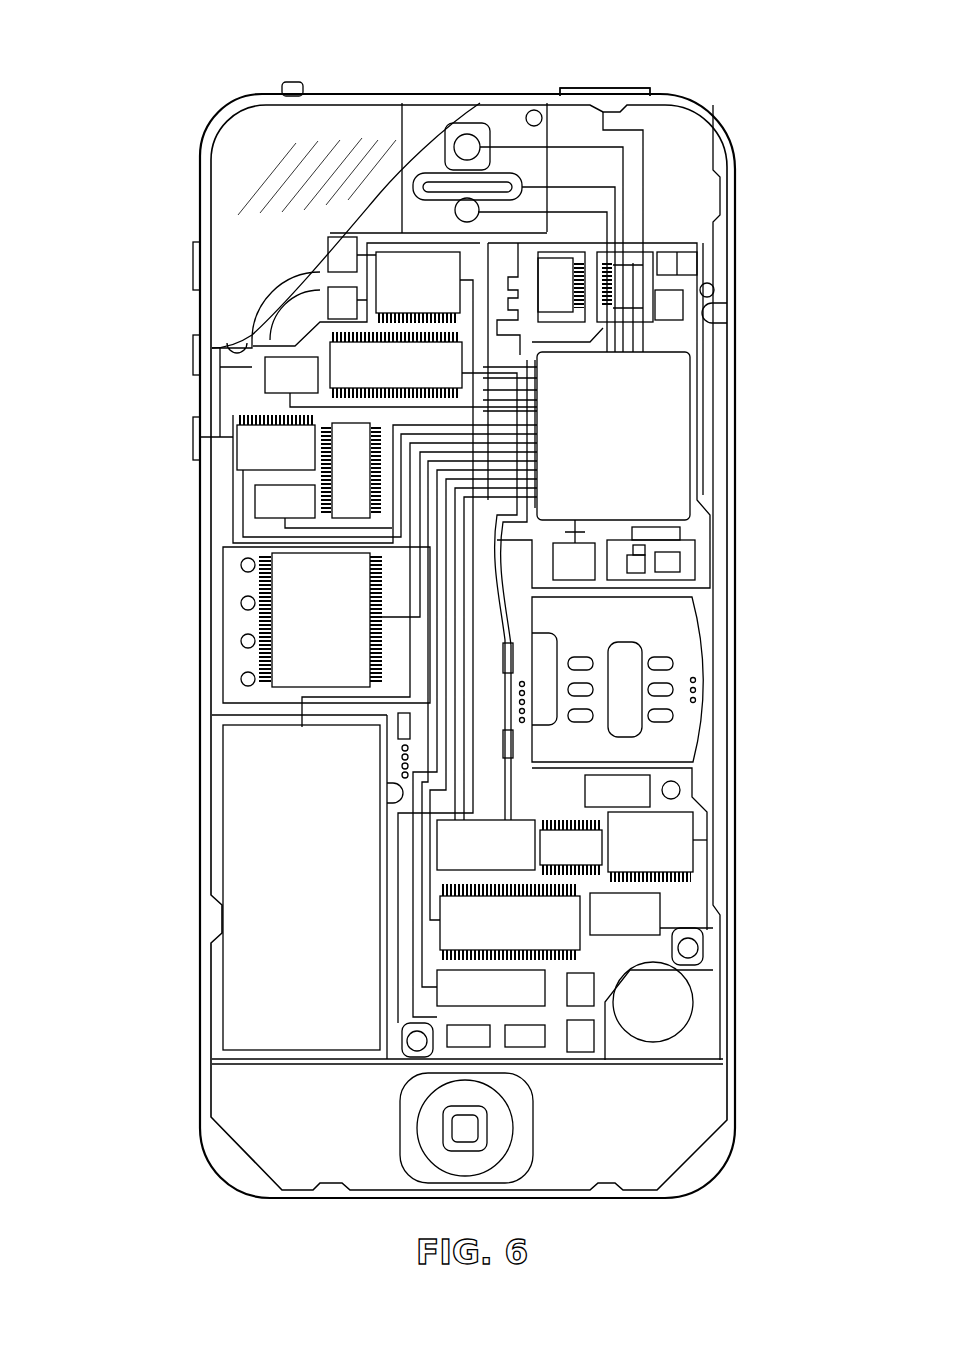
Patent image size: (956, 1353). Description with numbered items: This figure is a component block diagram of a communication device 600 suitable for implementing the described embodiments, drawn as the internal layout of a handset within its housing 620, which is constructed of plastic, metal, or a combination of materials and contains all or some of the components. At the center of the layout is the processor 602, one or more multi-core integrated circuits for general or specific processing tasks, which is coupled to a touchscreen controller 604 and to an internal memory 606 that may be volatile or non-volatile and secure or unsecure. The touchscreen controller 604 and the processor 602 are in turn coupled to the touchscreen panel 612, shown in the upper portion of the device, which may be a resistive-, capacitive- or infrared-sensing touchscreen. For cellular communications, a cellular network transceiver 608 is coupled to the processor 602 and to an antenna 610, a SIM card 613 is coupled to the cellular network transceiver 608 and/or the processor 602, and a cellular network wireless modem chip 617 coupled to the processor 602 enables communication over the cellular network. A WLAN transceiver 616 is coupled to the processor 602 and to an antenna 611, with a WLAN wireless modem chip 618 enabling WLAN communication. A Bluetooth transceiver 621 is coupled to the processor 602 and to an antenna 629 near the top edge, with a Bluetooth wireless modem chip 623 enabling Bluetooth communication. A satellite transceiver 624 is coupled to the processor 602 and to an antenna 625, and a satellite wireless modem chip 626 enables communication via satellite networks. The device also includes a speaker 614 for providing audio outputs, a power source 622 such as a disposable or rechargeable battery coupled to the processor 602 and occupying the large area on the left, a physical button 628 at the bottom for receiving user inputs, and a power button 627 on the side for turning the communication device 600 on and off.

The communication device 600 is at (168, 131).
The processor 602 is at (593, 446).
The touchscreen controller 604 is at (398, 294).
The internal memory 606 is at (375, 376).
The cellular network transceiver 608 is at (645, 265).
The antenna 610 is at (585, 562).
The antenna 611 is at (685, 305).
The touchscreen panel 612 is at (225, 197).
The SIM card 613 is at (256, 458).
The speaker 614 is at (430, 172).
The WLAN transceiver 616 is at (490, 933).
The cellular network wireless modem chip 617 is at (471, 999).
The WLAN wireless modem chip 618 is at (605, 924).
The housing 620 is at (735, 1068).
The Bluetooth transceiver 621 is at (551, 858).
The power source 622 is at (280, 898).
The Bluetooth wireless modem chip 623 is at (630, 851).
The satellite transceiver 624 is at (302, 628).
The antenna 625 is at (465, 856).
The satellite wireless modem chip 626 is at (271, 386).
The power button 627 is at (193, 420).
The physical button 628 is at (500, 1140).
The antenna 629 is at (563, 88).